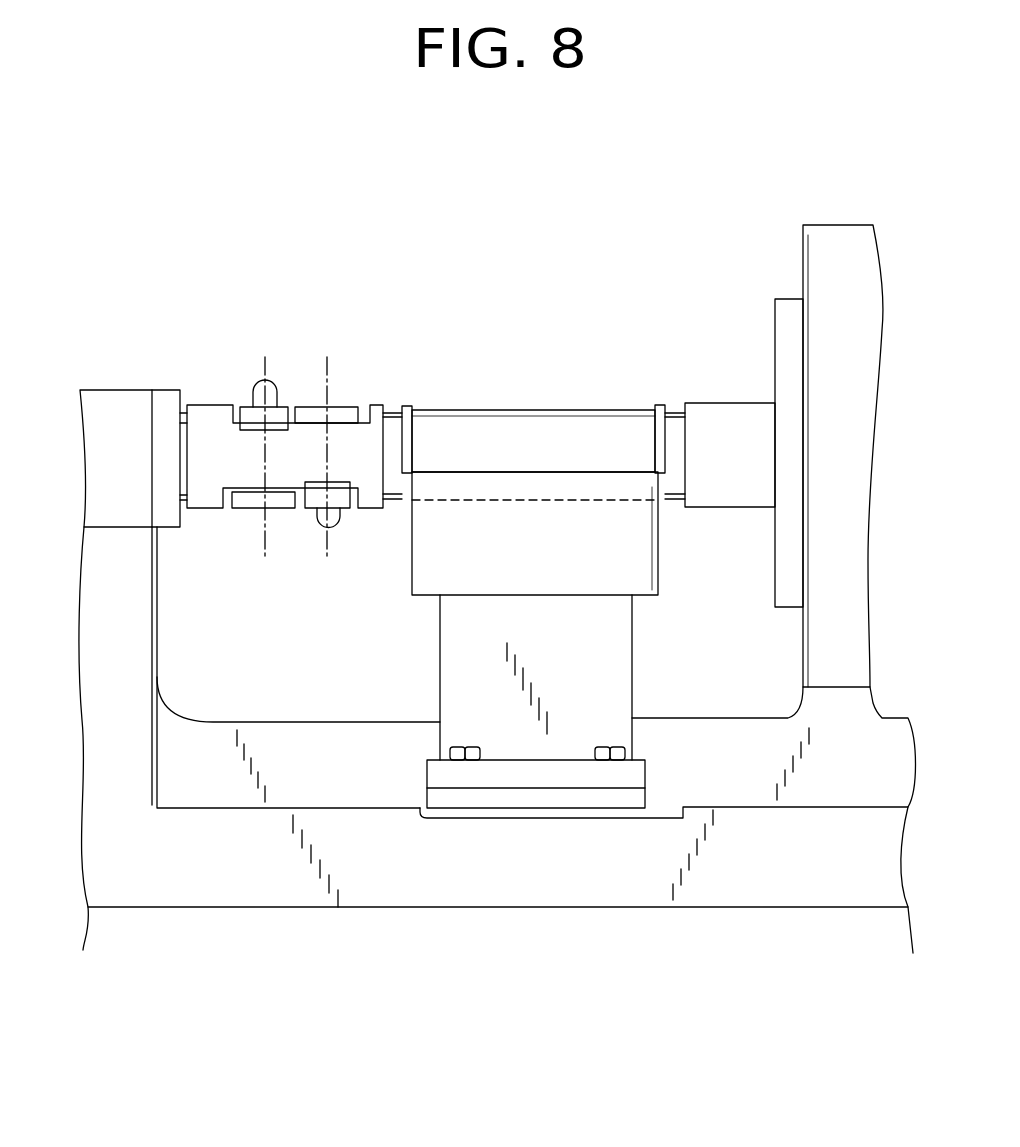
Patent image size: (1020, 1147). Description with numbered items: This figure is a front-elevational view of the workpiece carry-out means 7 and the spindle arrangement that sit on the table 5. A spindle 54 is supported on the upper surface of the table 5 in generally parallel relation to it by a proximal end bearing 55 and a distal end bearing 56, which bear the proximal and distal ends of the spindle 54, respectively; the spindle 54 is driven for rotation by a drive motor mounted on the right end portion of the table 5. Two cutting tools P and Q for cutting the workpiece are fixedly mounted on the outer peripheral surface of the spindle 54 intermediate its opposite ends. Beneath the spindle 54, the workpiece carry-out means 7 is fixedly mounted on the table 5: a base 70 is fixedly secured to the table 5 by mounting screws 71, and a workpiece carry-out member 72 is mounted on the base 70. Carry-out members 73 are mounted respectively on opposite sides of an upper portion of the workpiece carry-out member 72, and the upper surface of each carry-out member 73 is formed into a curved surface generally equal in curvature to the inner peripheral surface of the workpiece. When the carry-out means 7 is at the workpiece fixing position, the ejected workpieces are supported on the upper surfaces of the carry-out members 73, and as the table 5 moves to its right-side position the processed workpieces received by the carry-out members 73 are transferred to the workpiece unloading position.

The table 5 is at (807, 878).
The workpiece carry-out means 7 is at (575, 392).
The spindle 54 is at (392, 412).
The proximal end bearing 55 is at (825, 247).
The distal end bearing 56 is at (117, 403).
The base 70 is at (545, 805).
The mounting screws 71 is at (453, 745).
The workpiece carry-out member 72 is at (600, 677).
The carry-out members 73 is at (495, 422).
The cutting tool P is at (262, 382).
The cutting tool Q is at (335, 528).